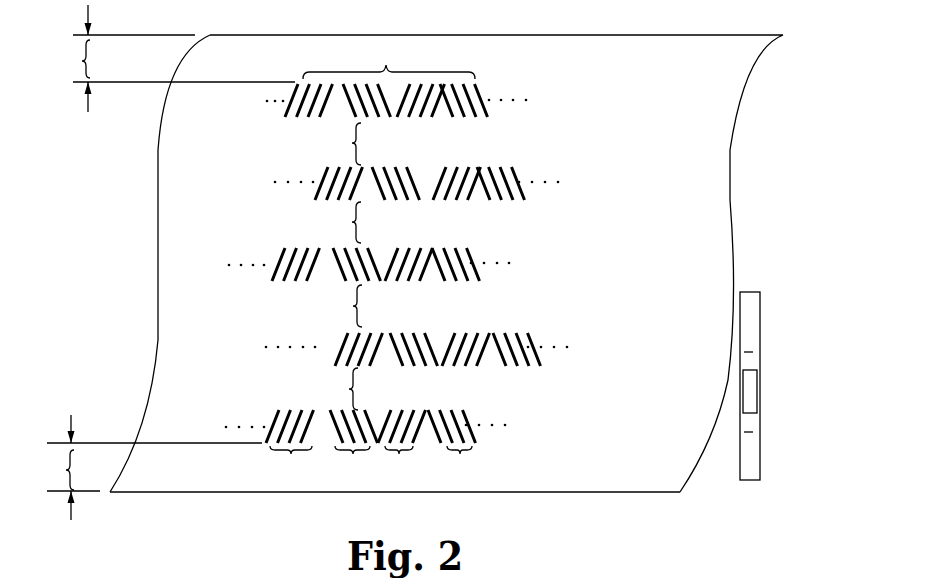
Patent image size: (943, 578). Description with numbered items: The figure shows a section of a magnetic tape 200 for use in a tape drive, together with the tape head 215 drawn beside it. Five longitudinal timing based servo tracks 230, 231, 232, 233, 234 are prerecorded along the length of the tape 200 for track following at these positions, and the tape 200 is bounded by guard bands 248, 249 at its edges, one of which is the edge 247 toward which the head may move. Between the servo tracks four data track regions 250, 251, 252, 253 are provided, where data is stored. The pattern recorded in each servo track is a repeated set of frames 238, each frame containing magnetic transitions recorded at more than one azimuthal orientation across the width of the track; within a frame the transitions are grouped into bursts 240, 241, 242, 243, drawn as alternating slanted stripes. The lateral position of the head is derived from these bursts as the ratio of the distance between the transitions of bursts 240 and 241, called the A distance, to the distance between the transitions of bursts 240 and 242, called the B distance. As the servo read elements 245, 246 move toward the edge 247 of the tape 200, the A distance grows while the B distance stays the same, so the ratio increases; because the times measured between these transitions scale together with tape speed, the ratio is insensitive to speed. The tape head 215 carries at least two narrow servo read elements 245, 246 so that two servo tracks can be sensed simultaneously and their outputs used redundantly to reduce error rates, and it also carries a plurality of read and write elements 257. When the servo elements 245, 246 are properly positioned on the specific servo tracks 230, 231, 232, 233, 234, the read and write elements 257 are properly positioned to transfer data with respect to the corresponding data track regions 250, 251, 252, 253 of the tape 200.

The magnetic tape 200 is at (521, 35).
The tape head 215 is at (761, 311).
The servo track 230 is at (258, 110).
The servo track 231 is at (297, 195).
The servo track 232 is at (266, 275).
The servo track 233 is at (331, 355).
The servo track 234 is at (442, 445).
The frame 238 is at (389, 59).
The burst 240 is at (290, 445).
The burst 241 is at (354, 445).
The burst 242 is at (402, 445).
The burst 243 is at (455, 445).
The servo read element 245 is at (748, 432).
The servo read element 246 is at (748, 352).
The edge 247 is at (520, 492).
The guard band 248 is at (167, 58).
The guard band 249 is at (139, 467).
The data track region 250 is at (352, 150).
The data track region 251 is at (350, 230).
The data track region 252 is at (352, 313).
The data track region 253 is at (346, 392).
The read and write elements 257 is at (758, 387).